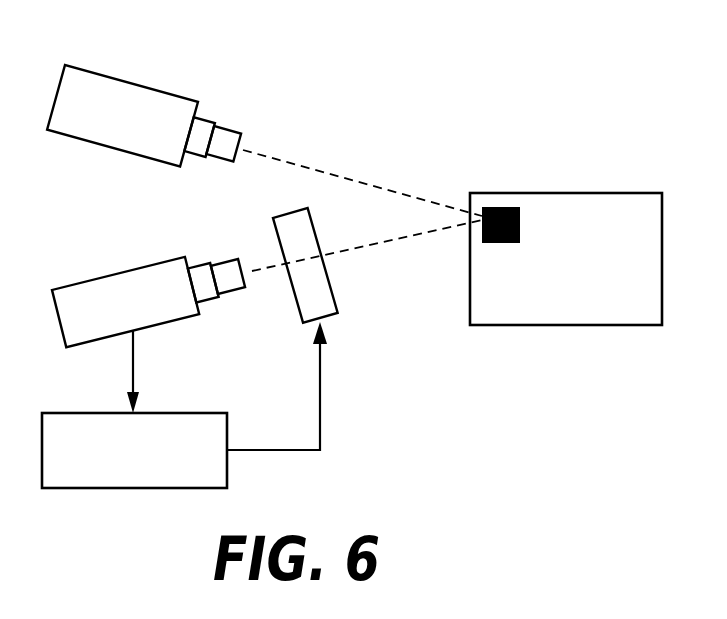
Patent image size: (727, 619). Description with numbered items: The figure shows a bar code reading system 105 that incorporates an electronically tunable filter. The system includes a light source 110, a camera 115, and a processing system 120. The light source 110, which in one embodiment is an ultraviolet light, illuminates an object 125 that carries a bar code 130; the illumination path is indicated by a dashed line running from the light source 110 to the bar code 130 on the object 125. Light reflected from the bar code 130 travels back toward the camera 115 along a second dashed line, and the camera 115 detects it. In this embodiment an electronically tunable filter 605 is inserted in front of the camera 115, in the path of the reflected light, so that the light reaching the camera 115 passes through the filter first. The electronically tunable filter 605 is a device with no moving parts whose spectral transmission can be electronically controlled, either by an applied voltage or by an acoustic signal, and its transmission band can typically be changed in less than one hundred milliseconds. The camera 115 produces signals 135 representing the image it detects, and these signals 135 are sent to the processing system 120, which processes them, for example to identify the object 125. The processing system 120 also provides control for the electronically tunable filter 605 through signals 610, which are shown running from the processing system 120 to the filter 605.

The bar code reading system 105 is at (460, 76).
The light source 110 is at (135, 84).
The camera 115 is at (112, 275).
The processing system 120 is at (178, 413).
The object 125 is at (600, 193).
The bar code 130 is at (507, 207).
The signals 135 is at (133, 358).
The electronically tunable filter 605 is at (330, 287).
The signals 610 is at (320, 394).